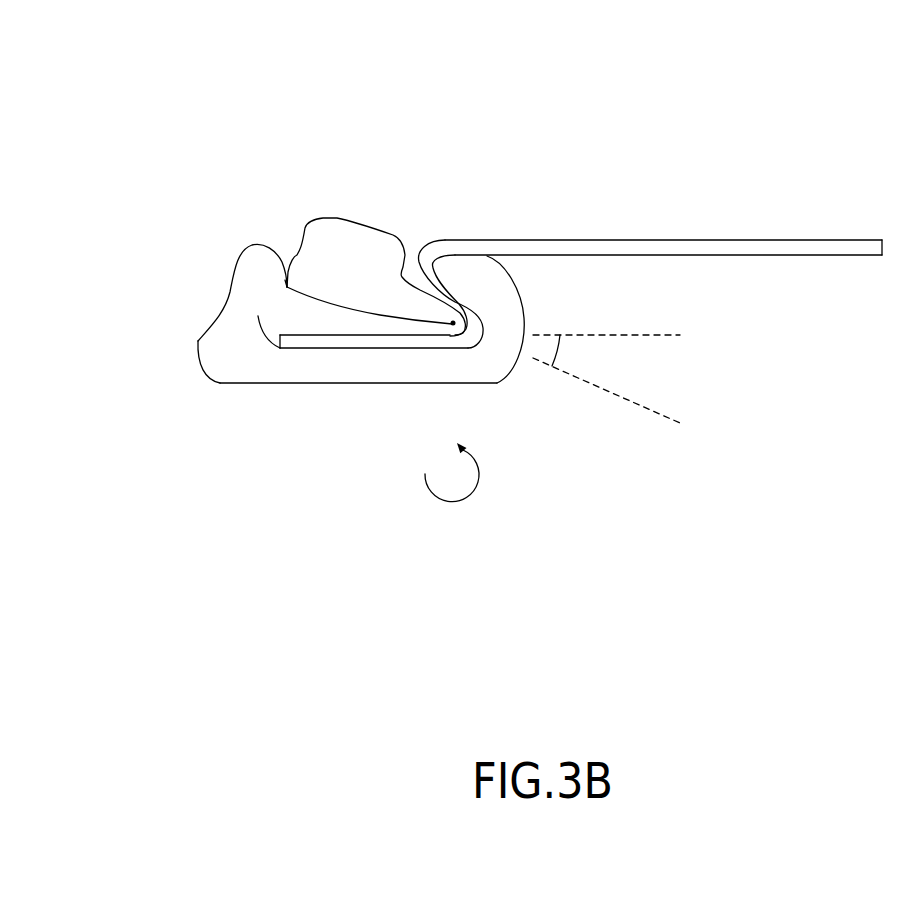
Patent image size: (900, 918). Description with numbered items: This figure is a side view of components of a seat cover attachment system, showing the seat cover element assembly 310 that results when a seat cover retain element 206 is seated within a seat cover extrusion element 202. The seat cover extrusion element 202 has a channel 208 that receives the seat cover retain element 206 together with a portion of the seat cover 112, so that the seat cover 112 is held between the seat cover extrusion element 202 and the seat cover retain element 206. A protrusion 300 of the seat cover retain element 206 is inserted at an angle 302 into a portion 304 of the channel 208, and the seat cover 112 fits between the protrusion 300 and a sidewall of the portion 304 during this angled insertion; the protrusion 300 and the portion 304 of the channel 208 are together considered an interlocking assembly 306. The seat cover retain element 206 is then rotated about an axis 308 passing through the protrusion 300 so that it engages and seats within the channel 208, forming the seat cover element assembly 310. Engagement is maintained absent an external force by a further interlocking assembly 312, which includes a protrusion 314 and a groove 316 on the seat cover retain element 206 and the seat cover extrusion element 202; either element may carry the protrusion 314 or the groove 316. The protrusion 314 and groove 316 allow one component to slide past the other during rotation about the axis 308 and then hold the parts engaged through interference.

The seat cover 112 is at (797, 255).
The seat cover extrusion element 202 is at (211, 372).
The seat cover retain element 206 is at (355, 222).
The channel 208 is at (288, 317).
The protrusion 300 is at (452, 328).
The angle 302 is at (562, 355).
The portion of the channel 304 is at (482, 335).
The interlocking assembly 306 is at (540, 444).
The axis 308 is at (453, 323).
The seat cover element assembly 310 is at (131, 96).
The interlocking assembly 312 is at (181, 242).
The protrusion 314 is at (284, 289).
The groove 316 is at (287, 286).